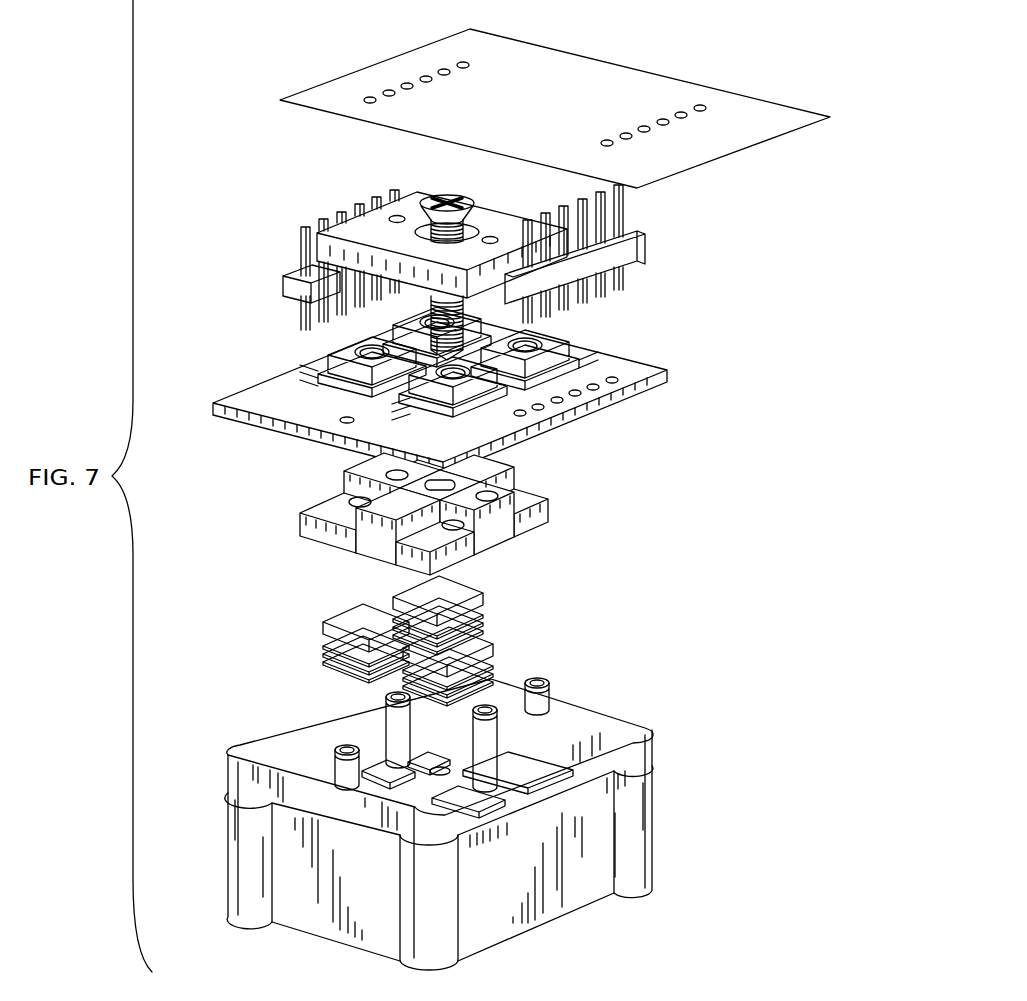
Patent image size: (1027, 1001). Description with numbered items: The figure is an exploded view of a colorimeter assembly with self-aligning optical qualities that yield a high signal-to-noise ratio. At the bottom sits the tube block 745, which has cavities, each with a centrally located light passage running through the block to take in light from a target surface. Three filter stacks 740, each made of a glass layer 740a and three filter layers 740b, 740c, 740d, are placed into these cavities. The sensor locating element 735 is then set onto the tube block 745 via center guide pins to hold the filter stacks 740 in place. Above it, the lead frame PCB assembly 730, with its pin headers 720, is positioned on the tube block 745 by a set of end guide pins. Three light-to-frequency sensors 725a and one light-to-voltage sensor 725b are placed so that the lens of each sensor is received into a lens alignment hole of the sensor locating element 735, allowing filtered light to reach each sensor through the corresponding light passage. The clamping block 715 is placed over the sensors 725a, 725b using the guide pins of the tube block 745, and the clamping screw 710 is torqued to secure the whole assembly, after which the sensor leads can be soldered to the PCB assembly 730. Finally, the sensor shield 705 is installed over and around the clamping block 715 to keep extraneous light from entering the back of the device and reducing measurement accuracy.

The sensor shield 705 is at (392, 75).
The clamping screw 710 is at (447, 193).
The clamping block 715 is at (497, 220).
The pin headers 720 is at (755, 229).
The light-to-frequency sensors 725a is at (420, 360).
The light-to-voltage sensor 725b is at (552, 343).
The lead frame PCB assembly 730 is at (638, 368).
The sensor locating element 735 is at (515, 532).
The filter stacks 740 is at (328, 606).
The glass layer 740a is at (325, 626).
The filter layer 740b is at (318, 668).
The filter layer 740c is at (408, 652).
The filter layer 740d is at (305, 623).
The tube block 745 is at (657, 821).